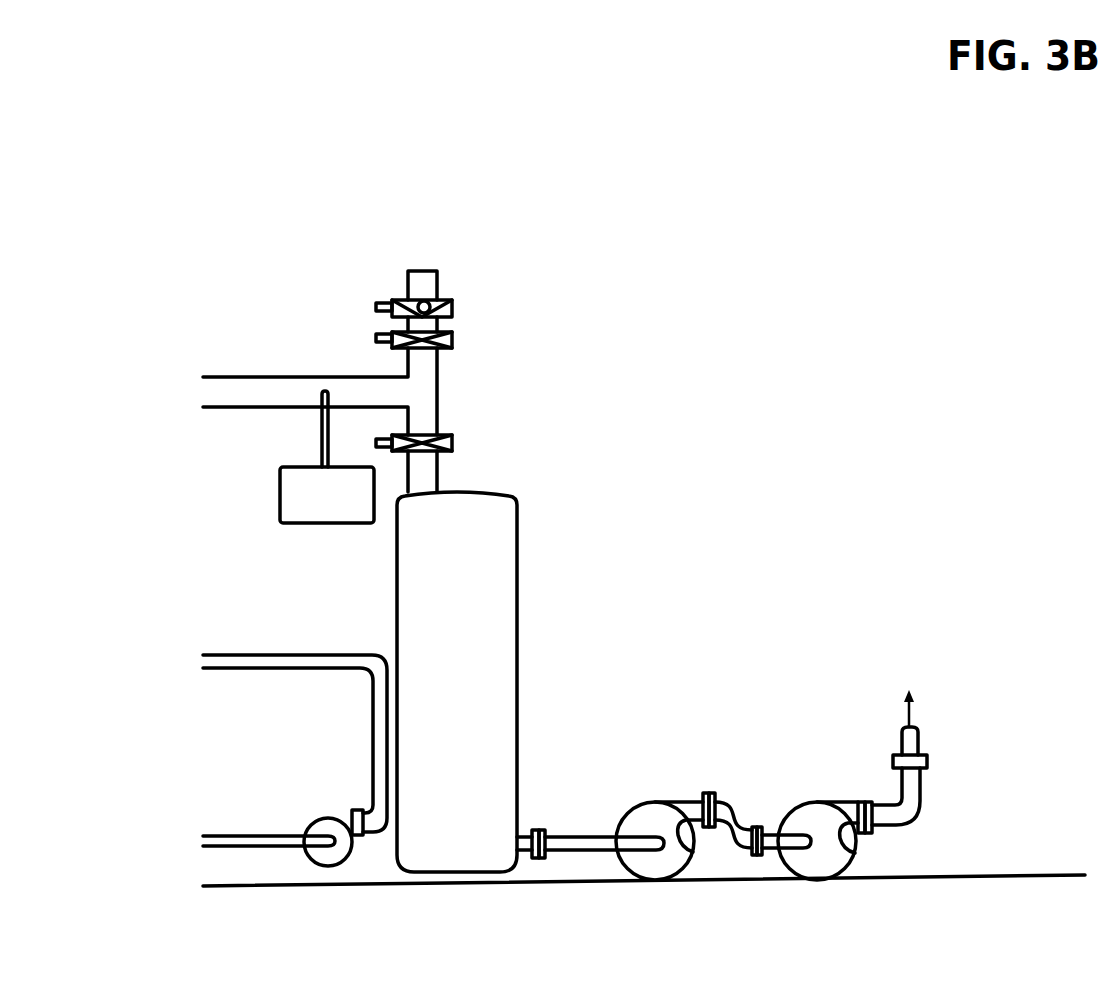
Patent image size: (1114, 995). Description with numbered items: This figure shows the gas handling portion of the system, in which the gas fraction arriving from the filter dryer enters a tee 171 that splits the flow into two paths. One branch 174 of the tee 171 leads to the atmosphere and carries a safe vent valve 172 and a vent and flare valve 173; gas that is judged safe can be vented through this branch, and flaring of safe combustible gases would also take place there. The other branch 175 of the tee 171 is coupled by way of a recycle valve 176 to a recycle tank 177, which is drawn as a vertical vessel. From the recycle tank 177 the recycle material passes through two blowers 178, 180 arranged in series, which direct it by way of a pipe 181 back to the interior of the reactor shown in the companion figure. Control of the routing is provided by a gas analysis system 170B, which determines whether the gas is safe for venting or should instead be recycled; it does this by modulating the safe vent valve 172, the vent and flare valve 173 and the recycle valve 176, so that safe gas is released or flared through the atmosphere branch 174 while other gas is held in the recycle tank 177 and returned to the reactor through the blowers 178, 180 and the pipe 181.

The gas analysis system 170B is at (333, 523).
The tee 171 is at (445, 407).
The safe vent valve 172 is at (452, 341).
The vent and flare valve 173 is at (452, 308).
The branch 174 is at (440, 280).
The branch 175 is at (437, 478).
The recycle valve 176 is at (452, 446).
The recycle tank 177 is at (495, 588).
The blower 178 is at (655, 866).
The blower 180 is at (803, 866).
The pipe 181 is at (916, 743).